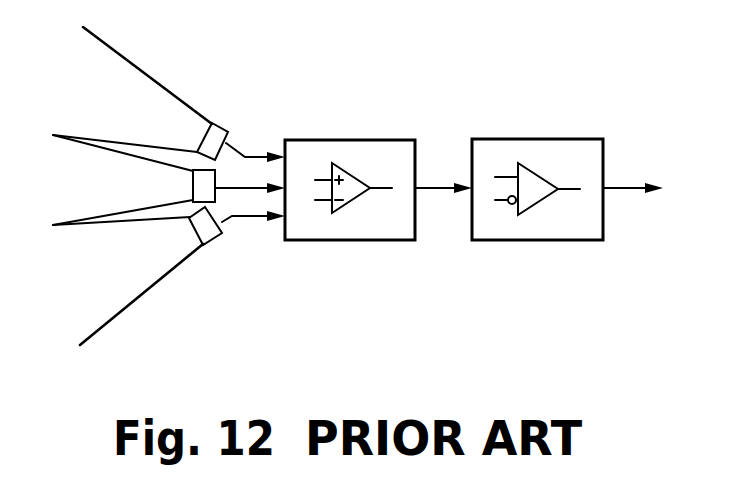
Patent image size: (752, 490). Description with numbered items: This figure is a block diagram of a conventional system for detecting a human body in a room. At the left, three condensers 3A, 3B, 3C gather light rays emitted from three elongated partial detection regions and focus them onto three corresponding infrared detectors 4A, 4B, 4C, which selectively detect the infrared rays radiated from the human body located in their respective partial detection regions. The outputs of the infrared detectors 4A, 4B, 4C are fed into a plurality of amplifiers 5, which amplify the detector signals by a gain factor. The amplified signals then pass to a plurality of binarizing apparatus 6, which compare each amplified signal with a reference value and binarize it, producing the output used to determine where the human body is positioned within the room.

The condenser 3A is at (128, 62).
The condenser 3B is at (93, 146).
The condenser 3C is at (137, 298).
The infrared detector 4A is at (217, 123).
The infrared detector 4B is at (218, 172).
The infrared detector 4C is at (218, 243).
The amplifiers 5 is at (380, 138).
The binarizing apparatus 6 is at (577, 138).